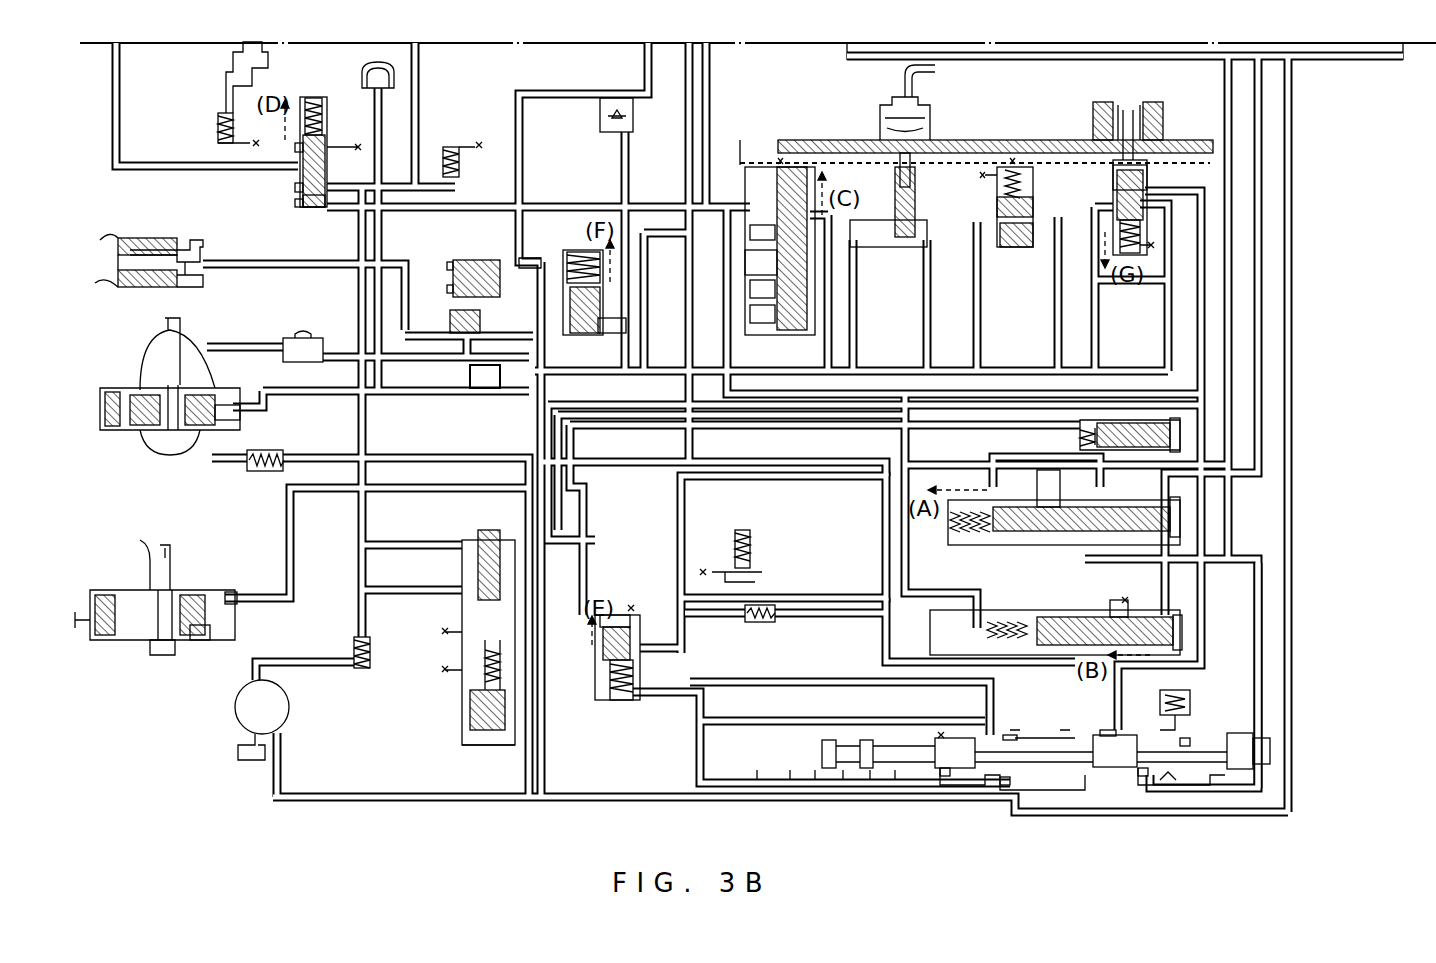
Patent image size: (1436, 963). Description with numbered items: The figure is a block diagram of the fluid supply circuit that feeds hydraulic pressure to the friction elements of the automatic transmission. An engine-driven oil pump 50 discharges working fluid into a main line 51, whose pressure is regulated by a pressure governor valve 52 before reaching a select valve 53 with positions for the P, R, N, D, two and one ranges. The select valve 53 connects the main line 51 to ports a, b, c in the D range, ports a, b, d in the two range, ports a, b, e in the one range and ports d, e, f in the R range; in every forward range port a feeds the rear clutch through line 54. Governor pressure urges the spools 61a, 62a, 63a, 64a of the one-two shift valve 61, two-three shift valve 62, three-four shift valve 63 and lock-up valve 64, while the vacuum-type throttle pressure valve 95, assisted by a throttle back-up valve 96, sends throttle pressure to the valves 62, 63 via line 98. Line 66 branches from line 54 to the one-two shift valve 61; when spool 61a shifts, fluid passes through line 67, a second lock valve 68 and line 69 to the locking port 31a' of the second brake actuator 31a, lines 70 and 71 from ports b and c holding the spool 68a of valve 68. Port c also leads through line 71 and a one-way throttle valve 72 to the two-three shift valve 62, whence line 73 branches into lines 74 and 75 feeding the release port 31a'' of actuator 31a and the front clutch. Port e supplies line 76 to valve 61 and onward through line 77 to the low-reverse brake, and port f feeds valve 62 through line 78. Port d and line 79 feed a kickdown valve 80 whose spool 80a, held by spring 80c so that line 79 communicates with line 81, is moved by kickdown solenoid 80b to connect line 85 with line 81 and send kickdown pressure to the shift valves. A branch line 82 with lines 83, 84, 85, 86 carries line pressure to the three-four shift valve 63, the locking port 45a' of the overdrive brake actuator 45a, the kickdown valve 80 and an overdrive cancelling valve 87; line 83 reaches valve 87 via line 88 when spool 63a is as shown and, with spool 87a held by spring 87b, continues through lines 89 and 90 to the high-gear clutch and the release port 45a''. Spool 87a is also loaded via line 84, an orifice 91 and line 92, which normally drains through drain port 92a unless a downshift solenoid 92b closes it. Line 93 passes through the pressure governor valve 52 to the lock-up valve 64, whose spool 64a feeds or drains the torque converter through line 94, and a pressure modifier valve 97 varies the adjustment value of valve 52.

The actuator of the second brake 31a is at (147, 595).
The locking-side port 31a' is at (198, 656).
The release port 31a'' is at (254, 580).
The actuator for the overdrive brake 45a is at (156, 386).
The locking port 45a' is at (269, 361).
The release port 45a'' is at (271, 425).
The oil pump 50 is at (236, 708).
The main line 51 is at (400, 805).
The pressure governor valve 52 is at (447, 703).
The select valve 53 is at (812, 752).
The line 54 is at (1292, 735).
The 1-2 shift valve 61 is at (987, 554).
The spool of 1-2 shift valve 61a is at (1048, 505).
The 2-3 shift valve 62 is at (1022, 612).
The spool of 2-3 shift valve 62a is at (1114, 612).
The 3-4 shift valve 63 is at (752, 162).
The spool of 3-4 shift valve 63a is at (762, 232).
The lock-up valve 64 is at (285, 190).
The spool of lock-up valve 64a is at (318, 208).
The line 66 is at (1010, 456).
The line 67 is at (820, 478).
The second lock valve 68 is at (588, 694).
The spool of second lock valve 68a is at (640, 613).
The line 69 is at (585, 530).
The line 70 is at (845, 681).
The line 71 is at (696, 770).
The one-way throttle valve 72 is at (752, 623).
The line 73 is at (883, 638).
The line 74 is at (630, 467).
The line 75 is at (693, 438).
The line 76 is at (1263, 677).
The line 77 is at (1229, 520).
The line 78 is at (1168, 688).
The line 79 is at (1204, 635).
The kickdown valve 80 is at (1163, 183).
The spool of kickdown valve 80a is at (1115, 182).
The kickdown solenoid 80b is at (1093, 112).
The spring 80c is at (1148, 460).
The line 81 is at (1082, 312).
The branch line 82 is at (527, 437).
The line 83 is at (832, 324).
The line 84 is at (417, 396).
The line 85 is at (1160, 353).
The line 86 is at (525, 321).
The overdrive cancelling valve 87 is at (545, 267).
The spool of overdrive cancelling valve 87a is at (622, 332).
The spring 87b is at (568, 268).
The line 88 is at (646, 258).
The line 89 is at (620, 168).
The line 90 is at (433, 360).
The orifice 91 is at (485, 376).
The line 92 is at (418, 280).
The drain port 92a is at (205, 247).
The downshift solenoid 92b is at (140, 238).
The line 93 is at (385, 610).
The line 94 is at (120, 86).
The throttle pressure valve 95 is at (930, 182).
The throttle back-up valve 96 is at (1013, 248).
The pressure modifier valve 97 is at (1158, 421).
The line 98 is at (857, 280).
The port a is at (1002, 788).
The port b is at (1010, 735).
The port c is at (945, 770).
The port d is at (1108, 732).
The port e is at (1138, 770).
The port f is at (1185, 740).